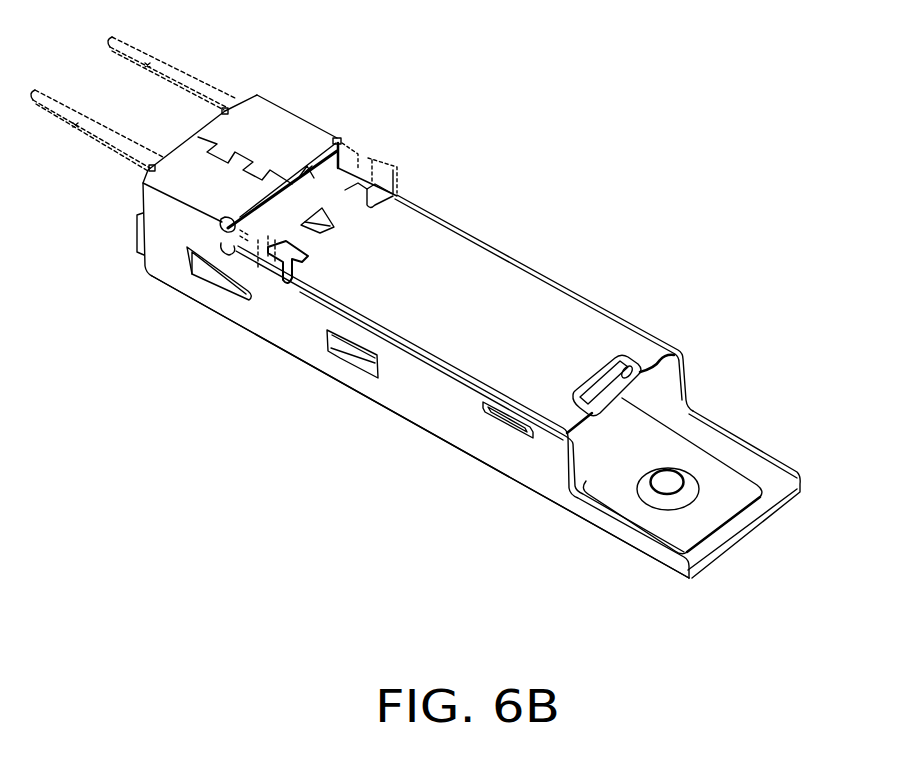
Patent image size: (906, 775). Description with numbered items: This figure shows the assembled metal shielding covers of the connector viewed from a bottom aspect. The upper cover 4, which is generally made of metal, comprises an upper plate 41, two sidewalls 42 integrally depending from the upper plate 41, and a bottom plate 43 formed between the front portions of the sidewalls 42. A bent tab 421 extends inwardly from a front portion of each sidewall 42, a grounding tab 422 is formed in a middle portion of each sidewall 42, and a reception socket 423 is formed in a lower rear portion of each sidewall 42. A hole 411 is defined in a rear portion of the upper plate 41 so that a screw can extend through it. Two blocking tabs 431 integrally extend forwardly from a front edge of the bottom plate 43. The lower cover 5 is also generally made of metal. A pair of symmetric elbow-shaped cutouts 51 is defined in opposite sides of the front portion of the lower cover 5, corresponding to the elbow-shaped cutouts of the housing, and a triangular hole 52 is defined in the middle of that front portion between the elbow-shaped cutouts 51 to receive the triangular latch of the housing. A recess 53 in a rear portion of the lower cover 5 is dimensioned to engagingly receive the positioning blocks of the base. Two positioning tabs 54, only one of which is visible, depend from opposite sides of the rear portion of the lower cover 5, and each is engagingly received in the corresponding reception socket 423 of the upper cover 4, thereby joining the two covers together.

The upper cover 4 is at (238, 331).
The upper plate 41 is at (642, 447).
The hole 411 is at (665, 483).
The sidewalls 42 is at (661, 380).
The bent tab 421 is at (207, 268).
The grounding tab 422 is at (340, 357).
The reception socket 423 is at (525, 435).
The bottom plate 43 is at (268, 113).
The blocking tabs 431 is at (130, 42).
The lower cover 5 is at (422, 227).
The elbow-shaped cutouts 51 is at (368, 200).
The triangular hole 52 is at (310, 222).
The recess 53 is at (613, 395).
The positioning tabs 54 is at (505, 422).